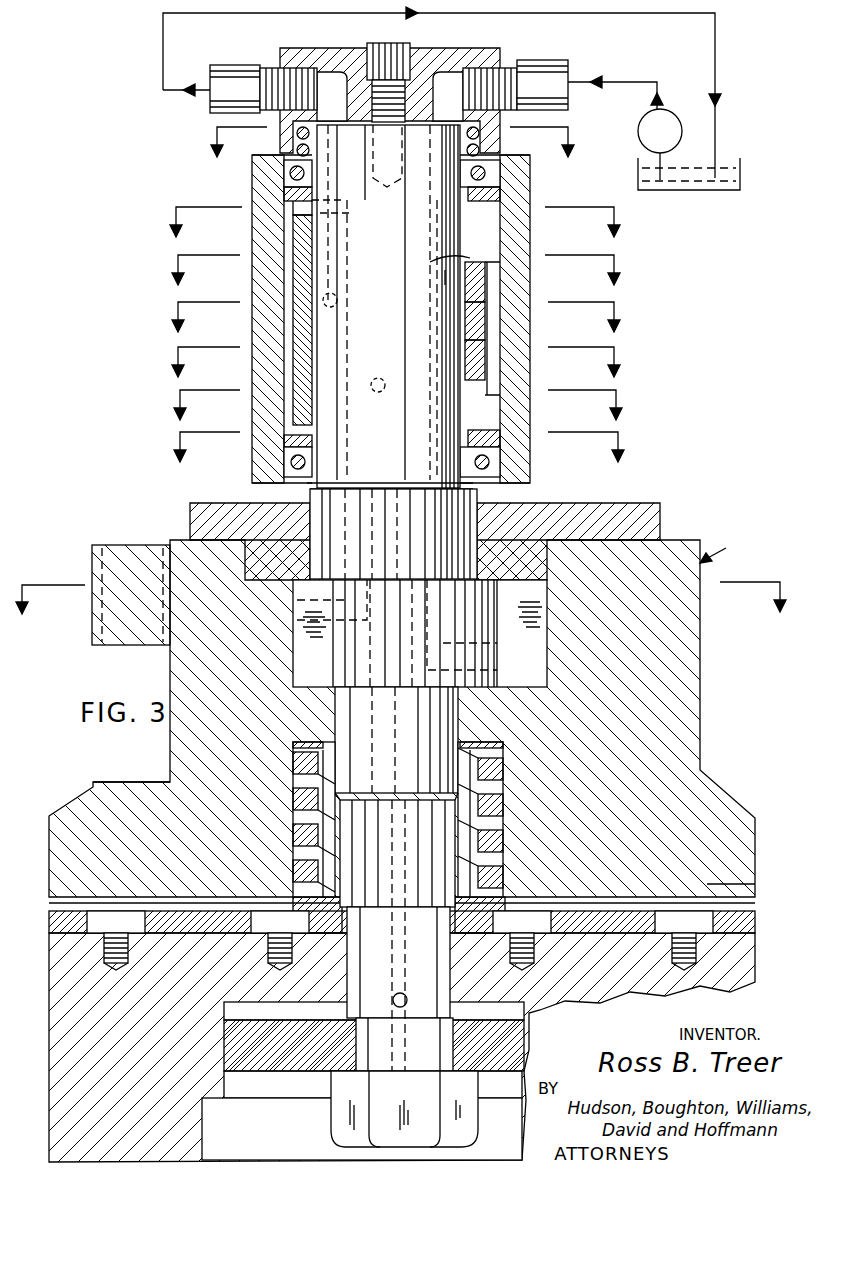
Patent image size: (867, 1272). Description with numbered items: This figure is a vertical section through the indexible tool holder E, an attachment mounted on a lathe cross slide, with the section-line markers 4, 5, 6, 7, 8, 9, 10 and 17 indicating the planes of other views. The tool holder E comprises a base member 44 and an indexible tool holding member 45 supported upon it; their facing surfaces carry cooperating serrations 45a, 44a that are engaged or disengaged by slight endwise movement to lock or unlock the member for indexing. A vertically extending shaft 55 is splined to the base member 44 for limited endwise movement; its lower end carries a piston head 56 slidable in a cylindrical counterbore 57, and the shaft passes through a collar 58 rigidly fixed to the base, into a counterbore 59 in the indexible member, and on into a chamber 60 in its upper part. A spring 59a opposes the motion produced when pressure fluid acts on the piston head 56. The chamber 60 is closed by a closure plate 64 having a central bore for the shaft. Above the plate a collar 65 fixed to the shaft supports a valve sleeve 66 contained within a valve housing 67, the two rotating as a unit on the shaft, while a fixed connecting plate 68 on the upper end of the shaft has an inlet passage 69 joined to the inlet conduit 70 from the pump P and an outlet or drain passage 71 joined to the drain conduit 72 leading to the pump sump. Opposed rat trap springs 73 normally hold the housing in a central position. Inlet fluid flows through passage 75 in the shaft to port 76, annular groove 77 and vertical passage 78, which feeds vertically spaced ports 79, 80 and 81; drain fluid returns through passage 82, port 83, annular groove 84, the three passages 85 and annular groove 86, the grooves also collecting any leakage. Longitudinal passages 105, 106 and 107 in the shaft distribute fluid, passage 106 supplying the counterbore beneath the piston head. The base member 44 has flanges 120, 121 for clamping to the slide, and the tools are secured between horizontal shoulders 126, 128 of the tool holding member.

The section line 4- 4 is at (387, 143).
The section line 5- 5 is at (401, 616).
The section line 6- 6 is at (395, 222).
The section line 7- 7 is at (398, 269).
The section line 8- 8 is at (395, 314).
The section line 9- 9 is at (398, 358).
The section line 10- 10 is at (396, 401).
The section line 17- 17 is at (399, 442).
The pump P is at (645, 120).
The indexible tool holder E is at (723, 547).
The base member 44 is at (60, 1120).
The serrations 44a is at (56, 903).
The indexible tool holding member 45 is at (702, 736).
The serrations 45a is at (745, 884).
The shaft 55 is at (370, 765).
The piston head 56 is at (278, 1055).
The cylindrical counterbore 57 is at (228, 1092).
The collar 58 is at (470, 925).
The counterbore 59 is at (503, 760).
The spring 59a is at (503, 812).
The chamber 60 is at (548, 640).
The closure plate 64 is at (662, 514).
The collar 65 is at (483, 489).
The valve sleeve 66 is at (503, 452).
The valve housing 67 is at (525, 418).
The connecting plate 68 is at (502, 58).
The inlet passage 69 is at (452, 52).
The inlet conduit 70 is at (556, 64).
The outlet or drain passage 71 is at (336, 78).
The outlet or drain conduit 72 is at (252, 75).
The rat trap springs 73 is at (292, 151).
The passage 75 is at (428, 237).
The port 76 is at (445, 275).
The annular groove 77 is at (430, 260).
The vertically extending passage 78 is at (488, 290).
The port 79 is at (465, 300).
The port 80 is at (465, 345).
The port 81 is at (487, 385).
The outlet or drain passage 82 is at (348, 204).
The port 83 is at (352, 218).
The annular groove 84 is at (313, 222).
The vertically extending passages 85 is at (292, 318).
The annular groove 86 is at (310, 432).
The passage 105 is at (357, 542).
The passage 106 is at (404, 742).
The passage 107 is at (442, 624).
The flange 120 is at (215, 1150).
The flange 121 is at (203, 1118).
The upper shoulder 126 is at (125, 644).
The shoulder 128 is at (120, 782).